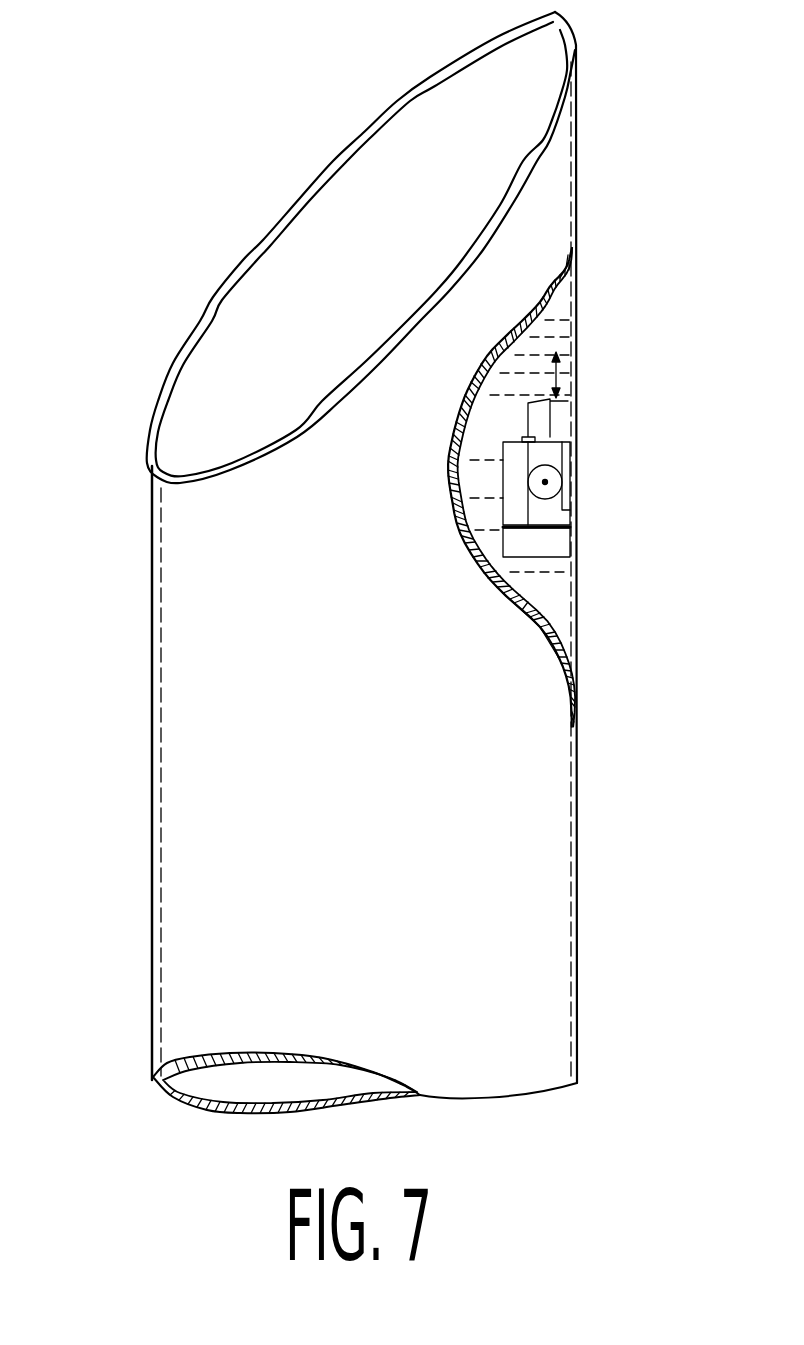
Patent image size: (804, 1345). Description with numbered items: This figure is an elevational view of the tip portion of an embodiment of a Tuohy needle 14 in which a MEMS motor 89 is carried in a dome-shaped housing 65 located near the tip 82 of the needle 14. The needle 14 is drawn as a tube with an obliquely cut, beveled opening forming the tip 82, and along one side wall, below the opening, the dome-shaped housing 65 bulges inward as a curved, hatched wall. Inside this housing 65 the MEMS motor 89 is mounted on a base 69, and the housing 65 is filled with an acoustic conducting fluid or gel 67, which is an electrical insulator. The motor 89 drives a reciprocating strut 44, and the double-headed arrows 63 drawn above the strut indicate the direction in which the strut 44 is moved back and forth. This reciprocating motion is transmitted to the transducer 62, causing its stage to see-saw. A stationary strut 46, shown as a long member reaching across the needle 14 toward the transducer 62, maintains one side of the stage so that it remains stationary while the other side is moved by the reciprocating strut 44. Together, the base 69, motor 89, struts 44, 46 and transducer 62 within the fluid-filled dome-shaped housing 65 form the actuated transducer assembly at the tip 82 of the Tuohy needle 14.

The Tuohy needle 14 is at (152, 832).
The tip 82 is at (338, 158).
The stationary strut 46 is at (527, 401).
The dome-shaped housing 65 is at (567, 315).
The arrows 63 is at (560, 376).
The transducer 62 is at (568, 403).
The reciprocating strut 44 is at (565, 450).
The MEMS motor 89 is at (566, 507).
The base 69 is at (560, 570).
The acoustic conducting fluid or gel 67 is at (557, 600).